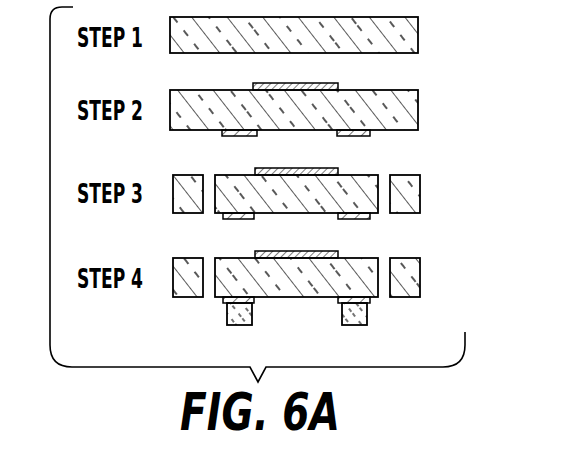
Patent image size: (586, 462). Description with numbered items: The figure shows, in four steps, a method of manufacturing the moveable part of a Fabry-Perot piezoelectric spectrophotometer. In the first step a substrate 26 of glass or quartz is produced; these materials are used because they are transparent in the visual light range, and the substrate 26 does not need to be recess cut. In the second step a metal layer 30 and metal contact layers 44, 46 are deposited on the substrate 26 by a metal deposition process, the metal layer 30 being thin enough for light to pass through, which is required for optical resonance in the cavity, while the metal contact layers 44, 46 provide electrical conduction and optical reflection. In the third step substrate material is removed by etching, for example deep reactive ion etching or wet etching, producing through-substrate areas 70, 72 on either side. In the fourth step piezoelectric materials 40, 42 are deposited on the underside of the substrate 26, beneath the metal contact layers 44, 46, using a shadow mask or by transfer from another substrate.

The substrate 26 is at (418, 32).
The metal layer 30 is at (338, 86).
The metal contact layer 44 is at (222, 131).
The metal contact layer 46 is at (372, 133).
The area 70 is at (204, 219).
The area 72 is at (389, 219).
The piezoelectric material 40 is at (226, 310).
The piezoelectric material 42 is at (368, 312).